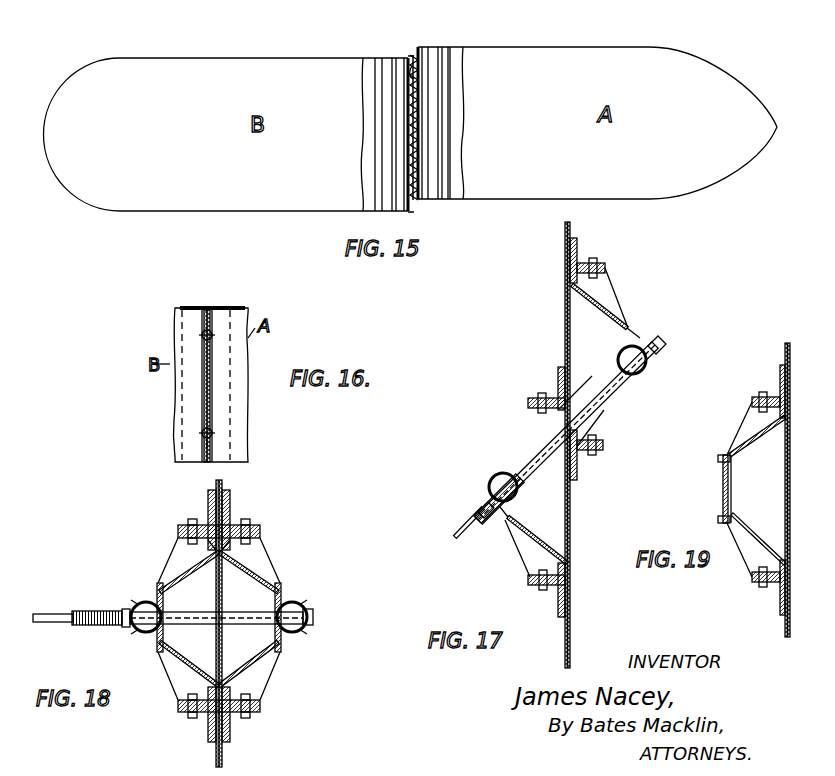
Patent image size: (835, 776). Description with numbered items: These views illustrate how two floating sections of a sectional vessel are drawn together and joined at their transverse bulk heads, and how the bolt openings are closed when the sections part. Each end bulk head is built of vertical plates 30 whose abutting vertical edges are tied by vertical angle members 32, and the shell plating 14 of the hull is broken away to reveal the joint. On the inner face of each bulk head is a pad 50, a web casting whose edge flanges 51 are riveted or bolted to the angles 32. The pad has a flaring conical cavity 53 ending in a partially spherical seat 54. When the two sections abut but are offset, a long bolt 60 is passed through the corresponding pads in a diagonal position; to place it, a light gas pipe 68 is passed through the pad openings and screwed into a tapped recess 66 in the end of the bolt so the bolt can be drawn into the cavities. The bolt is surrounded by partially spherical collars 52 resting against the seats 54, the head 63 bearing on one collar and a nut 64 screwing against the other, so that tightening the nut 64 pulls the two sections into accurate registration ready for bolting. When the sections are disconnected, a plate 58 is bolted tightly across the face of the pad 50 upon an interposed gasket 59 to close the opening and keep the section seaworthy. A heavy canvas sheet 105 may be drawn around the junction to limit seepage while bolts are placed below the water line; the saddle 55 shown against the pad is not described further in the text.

In FIG. 15, the hull skin of section A 14 is at (450, 80).
In FIG. 15, the vertical plates 30 is at (419, 50).
In FIG. 16, the vertical plates 30 is at (210, 364).
In FIG. 18, the vertical plates 30 is at (222, 486).
In FIG. 17, the vertical plates 30 is at (571, 226).
In FIG. 19, the vertical plates 30 is at (785, 347).
In FIG. 15, the vertical angle members 32 is at (410, 114).
In FIG. 16, the vertical angle members 32 is at (212, 396).
In FIG. 18, the vertical angle members 32 is at (208, 502).
In FIG. 17, the vertical angle members 32 is at (577, 250).
In FIG. 19, the vertical angle members 32 is at (780, 374).
In FIG. 16, the pad 50 is at (210, 332).
In FIG. 18, the pad 50 is at (219, 619).
In FIG. 17, the pad 50 is at (522, 424).
In FIG. 19, the pad 50 is at (756, 489).
In FIG. 18, the edge flanges 51 is at (260, 531).
In FIG. 17, the edge flanges 51 is at (528, 403).
In FIG. 19, the edge flanges 51 is at (752, 405).
In FIG. 18, the partially spherical collars 52 is at (172, 634).
In FIG. 17, the partially spherical collars 52 is at (618, 338).
In FIG. 18, the flaring or conical cavities 53 is at (252, 570).
In FIG. 17, the flaring or conical cavities 53 is at (590, 300).
In FIG. 19, the flaring or conical cavities 53 is at (758, 446).
In FIG. 19, the partially spherical seat 54 is at (730, 466).
In FIG. 18, the saddle 55 is at (140, 597).
In FIG. 17, the saddle 55 is at (646, 368).
In FIG. 19, the plates 58 is at (723, 485).
In FIG. 19, the gasket 59 is at (732, 496).
In FIG. 15, the long bolt 60 is at (410, 66).
In FIG. 16, the long bolt 60 is at (212, 433).
In FIG. 18, the long bolt 60 is at (240, 612).
In FIG. 17, the long bolt 60 is at (596, 390).
In FIG. 18, the head 63 is at (312, 612).
In FIG. 17, the head 63 is at (660, 340).
In FIG. 18, the nut 64 is at (124, 609).
In FIG. 17, the nut 64 is at (480, 506).
In FIG. 18, the tapped recess 66 is at (85, 625).
In FIG. 17, the tapped recess 66 is at (512, 496).
In FIG. 18, the light gas pipe 68 is at (45, 622).
In FIG. 17, the light gas pipe 68 is at (458, 538).
In FIG. 16, the canvas sheet 105 is at (212, 299).